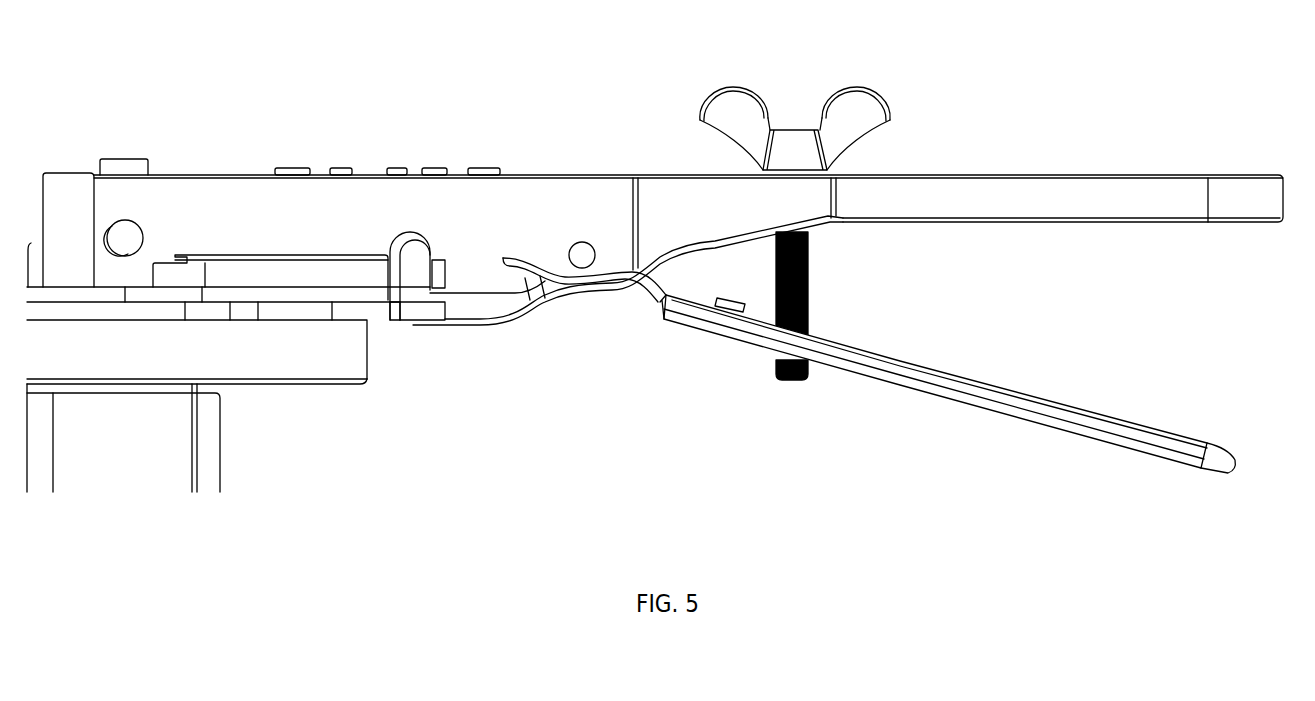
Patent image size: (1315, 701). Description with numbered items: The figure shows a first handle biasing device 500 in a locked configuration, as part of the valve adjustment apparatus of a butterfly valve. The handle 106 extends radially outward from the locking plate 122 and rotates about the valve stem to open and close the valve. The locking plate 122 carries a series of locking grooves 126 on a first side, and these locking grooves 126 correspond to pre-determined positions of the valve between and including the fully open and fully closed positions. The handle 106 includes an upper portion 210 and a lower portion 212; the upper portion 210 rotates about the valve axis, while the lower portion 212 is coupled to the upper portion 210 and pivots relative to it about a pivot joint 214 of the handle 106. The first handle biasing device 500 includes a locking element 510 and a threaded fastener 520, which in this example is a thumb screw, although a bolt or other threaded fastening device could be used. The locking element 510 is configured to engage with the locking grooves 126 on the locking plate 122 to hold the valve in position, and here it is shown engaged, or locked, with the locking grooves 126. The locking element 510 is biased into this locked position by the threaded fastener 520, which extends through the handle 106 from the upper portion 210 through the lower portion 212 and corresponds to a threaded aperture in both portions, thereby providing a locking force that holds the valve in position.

The first handle biasing device 500 is at (426, 58).
The handle 106 is at (1228, 174).
The locking plate 122 is at (292, 307).
The locking grooves 126 is at (407, 322).
The upper portion 210 is at (1150, 222).
The lower portion 212 is at (1077, 407).
The pivot joint 214 is at (583, 260).
The locking element 510 is at (470, 327).
The threaded fastener 520 is at (888, 110).